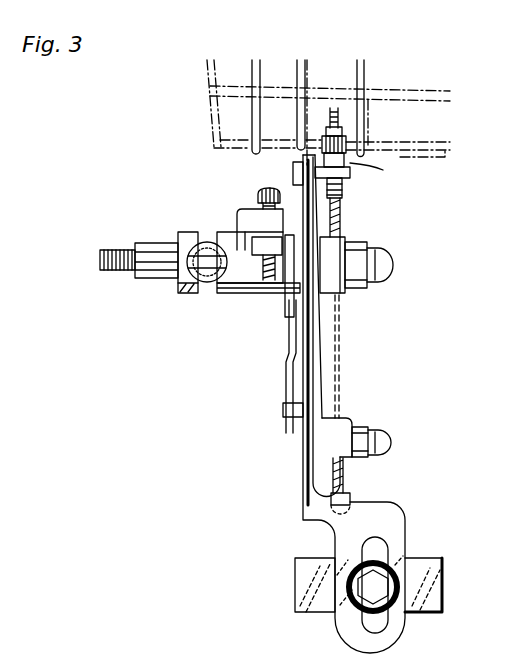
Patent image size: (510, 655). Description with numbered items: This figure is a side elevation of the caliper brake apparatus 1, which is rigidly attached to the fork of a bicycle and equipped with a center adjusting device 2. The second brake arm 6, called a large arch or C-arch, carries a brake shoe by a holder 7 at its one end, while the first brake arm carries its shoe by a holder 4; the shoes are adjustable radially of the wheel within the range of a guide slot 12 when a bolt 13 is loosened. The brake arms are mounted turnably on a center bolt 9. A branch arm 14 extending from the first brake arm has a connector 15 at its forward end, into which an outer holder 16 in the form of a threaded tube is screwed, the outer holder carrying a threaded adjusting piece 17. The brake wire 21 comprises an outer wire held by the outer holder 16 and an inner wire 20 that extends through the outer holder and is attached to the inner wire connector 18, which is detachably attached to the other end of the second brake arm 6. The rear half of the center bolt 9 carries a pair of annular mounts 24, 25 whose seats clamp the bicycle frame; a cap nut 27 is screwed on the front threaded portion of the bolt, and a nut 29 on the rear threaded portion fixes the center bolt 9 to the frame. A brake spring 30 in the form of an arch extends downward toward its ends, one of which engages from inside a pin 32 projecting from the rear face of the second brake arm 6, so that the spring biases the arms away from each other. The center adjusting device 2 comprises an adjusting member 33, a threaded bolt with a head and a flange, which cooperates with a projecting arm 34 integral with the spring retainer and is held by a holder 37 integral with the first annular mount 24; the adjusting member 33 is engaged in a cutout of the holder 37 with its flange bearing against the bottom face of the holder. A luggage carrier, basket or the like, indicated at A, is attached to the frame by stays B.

The caliper brake apparatus 1 is at (425, 272).
The center adjusting device 2 is at (240, 198).
The holder 4 is at (287, 157).
The second brake arm 6 is at (305, 473).
The holder 7 is at (430, 613).
The center bolt 9 is at (108, 270).
The guide slot 12 is at (387, 552).
The bolt 13 is at (363, 590).
The branch arm 14 is at (320, 220).
The connector 15 is at (350, 172).
The outer holder 16 is at (348, 148).
The threaded adjusting piece 17 is at (383, 170).
The inner wire connector 18 is at (363, 427).
The inner wire 20 is at (340, 478).
The brake wire 21 is at (350, 120).
The annular mount 24 is at (230, 293).
The annular mount 25 is at (185, 293).
The cap nut 27 is at (388, 285).
The nut 29 is at (150, 244).
The brake spring 30 is at (292, 360).
The pin 32 is at (283, 410).
The adjusting member 33 is at (258, 190).
The projecting arm 34 is at (267, 275).
The holder 37 is at (233, 250).
The luggage carrier, basket or the like A is at (212, 90).
The stays B is at (385, 180).